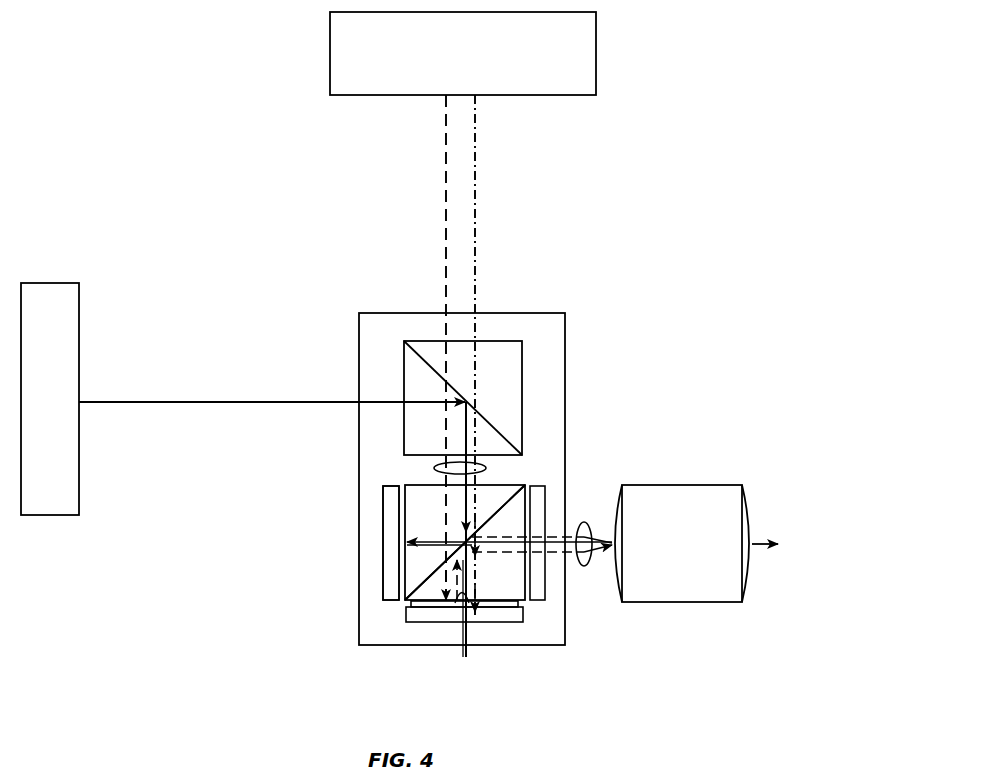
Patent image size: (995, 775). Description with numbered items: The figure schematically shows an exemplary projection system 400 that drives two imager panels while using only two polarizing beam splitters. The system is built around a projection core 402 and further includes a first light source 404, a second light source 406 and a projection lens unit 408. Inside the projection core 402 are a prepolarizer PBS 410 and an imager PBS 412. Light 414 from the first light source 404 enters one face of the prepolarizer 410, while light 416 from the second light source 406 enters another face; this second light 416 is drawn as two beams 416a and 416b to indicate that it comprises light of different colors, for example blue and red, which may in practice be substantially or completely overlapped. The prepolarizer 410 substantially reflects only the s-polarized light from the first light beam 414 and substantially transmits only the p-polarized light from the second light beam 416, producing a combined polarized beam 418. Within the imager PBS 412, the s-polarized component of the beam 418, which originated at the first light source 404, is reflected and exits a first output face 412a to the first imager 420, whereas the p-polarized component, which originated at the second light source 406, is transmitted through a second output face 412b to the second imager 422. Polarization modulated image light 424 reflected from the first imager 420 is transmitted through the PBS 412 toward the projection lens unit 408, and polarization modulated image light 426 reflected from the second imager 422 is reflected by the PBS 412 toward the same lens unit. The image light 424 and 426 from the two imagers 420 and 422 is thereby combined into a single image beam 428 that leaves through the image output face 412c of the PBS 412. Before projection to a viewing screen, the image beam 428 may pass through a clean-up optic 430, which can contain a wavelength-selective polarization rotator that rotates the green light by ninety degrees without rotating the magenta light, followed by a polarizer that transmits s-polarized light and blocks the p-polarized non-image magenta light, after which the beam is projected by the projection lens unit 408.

The projection system 400 is at (128, 111).
The projection core 402 is at (359, 368).
The first light source 404 is at (80, 331).
The second light source 406 is at (330, 72).
The projection lens unit 408 is at (684, 485).
The prepolarizer PBS 410 is at (404, 345).
The imager PBS 412 is at (520, 624).
The first output face 412a is at (403, 490).
The second output face 412b is at (406, 616).
The image output face 412c is at (530, 493).
The light from the first light source 414 is at (205, 404).
The light from the second light source 416 is at (446, 143).
The first beam of second light source 416a is at (446, 193).
The second beam of second light source 416b is at (475, 171).
The combined polarized beam 418 is at (436, 468).
The first imager 420 is at (383, 576).
The second imager 422 is at (418, 624).
The polarization modulated image light 424 is at (398, 558).
The polarization modulated image light 426 is at (466, 541).
The image beam 428 is at (584, 566).
The clean-up optic 430 is at (545, 490).